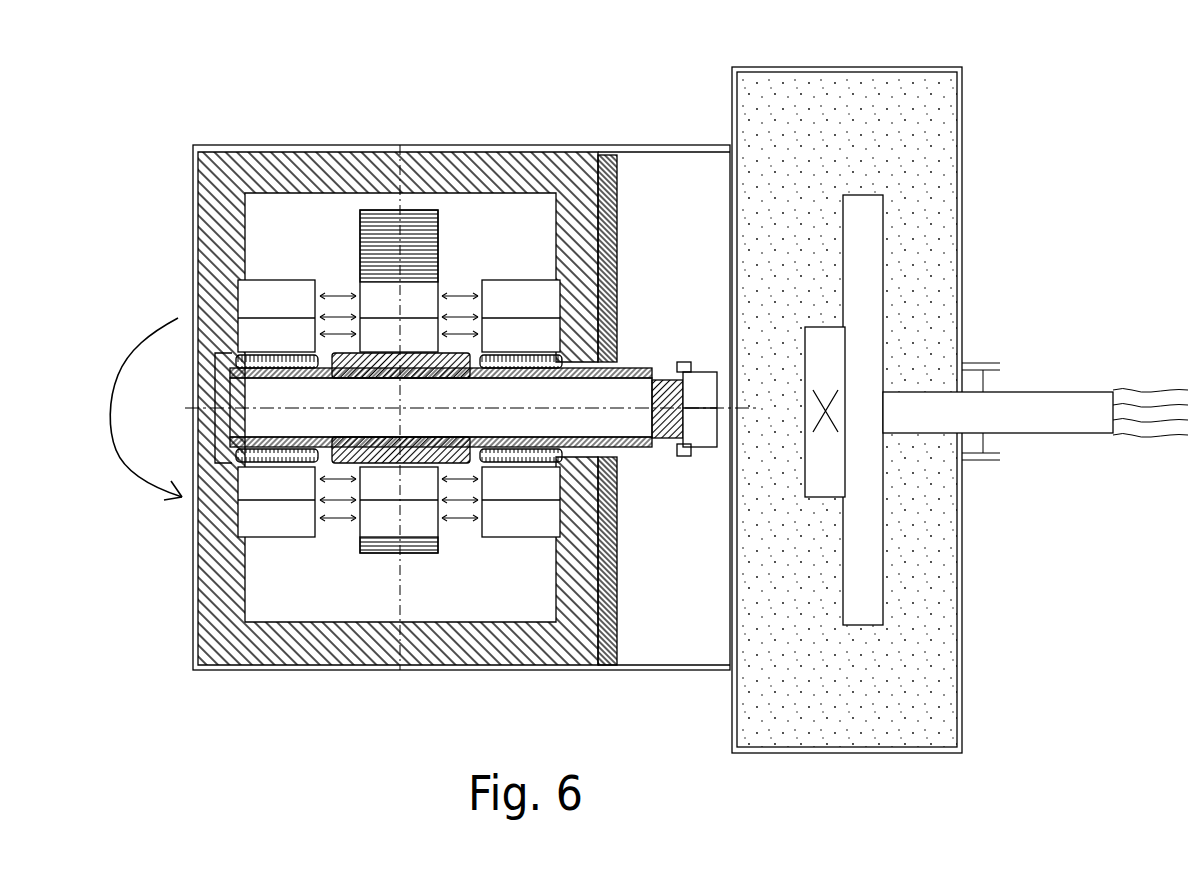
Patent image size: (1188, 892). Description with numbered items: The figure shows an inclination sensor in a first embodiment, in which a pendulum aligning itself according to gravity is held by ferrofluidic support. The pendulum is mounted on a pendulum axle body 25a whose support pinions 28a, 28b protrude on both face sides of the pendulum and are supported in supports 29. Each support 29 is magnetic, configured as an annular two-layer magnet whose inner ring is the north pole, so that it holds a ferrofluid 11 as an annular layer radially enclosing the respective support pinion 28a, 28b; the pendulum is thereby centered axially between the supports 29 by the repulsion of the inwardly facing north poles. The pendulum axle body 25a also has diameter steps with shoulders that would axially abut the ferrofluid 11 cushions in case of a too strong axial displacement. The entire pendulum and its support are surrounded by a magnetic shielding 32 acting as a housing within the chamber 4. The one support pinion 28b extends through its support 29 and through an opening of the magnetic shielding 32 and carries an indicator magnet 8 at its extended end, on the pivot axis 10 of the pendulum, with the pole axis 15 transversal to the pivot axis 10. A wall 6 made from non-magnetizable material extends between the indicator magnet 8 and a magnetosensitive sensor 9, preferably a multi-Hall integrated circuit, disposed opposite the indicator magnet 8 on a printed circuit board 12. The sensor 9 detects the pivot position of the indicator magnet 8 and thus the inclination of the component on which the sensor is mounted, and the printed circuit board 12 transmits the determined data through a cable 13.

The chamber 4 is at (461, 407).
The magnetic shielding 32 is at (365, 168).
The ferrofluid 11 is at (233, 448).
The supports 29 is at (258, 525).
The pivot axis 10 is at (620, 404).
The pendulum axle body 25a is at (356, 368).
The support pinion 28a is at (268, 373).
The support pinion 28b is at (524, 373).
The indicator magnet 8 is at (713, 370).
The pole axis 15 is at (699, 458).
The wall 6 is at (733, 548).
The printed circuit board 12 is at (862, 600).
The magnetosensitive sensor 9 is at (813, 326).
The cable 13 is at (1035, 411).